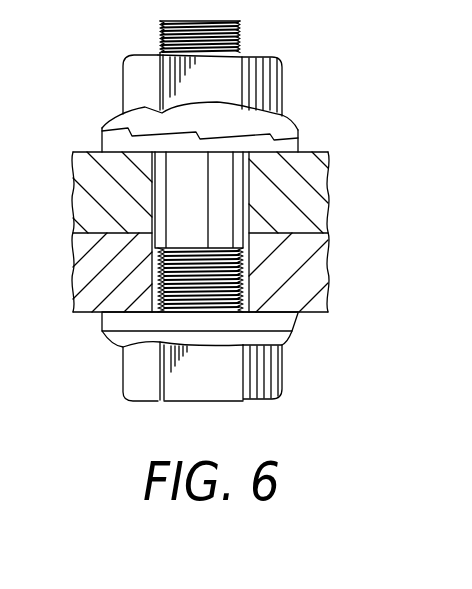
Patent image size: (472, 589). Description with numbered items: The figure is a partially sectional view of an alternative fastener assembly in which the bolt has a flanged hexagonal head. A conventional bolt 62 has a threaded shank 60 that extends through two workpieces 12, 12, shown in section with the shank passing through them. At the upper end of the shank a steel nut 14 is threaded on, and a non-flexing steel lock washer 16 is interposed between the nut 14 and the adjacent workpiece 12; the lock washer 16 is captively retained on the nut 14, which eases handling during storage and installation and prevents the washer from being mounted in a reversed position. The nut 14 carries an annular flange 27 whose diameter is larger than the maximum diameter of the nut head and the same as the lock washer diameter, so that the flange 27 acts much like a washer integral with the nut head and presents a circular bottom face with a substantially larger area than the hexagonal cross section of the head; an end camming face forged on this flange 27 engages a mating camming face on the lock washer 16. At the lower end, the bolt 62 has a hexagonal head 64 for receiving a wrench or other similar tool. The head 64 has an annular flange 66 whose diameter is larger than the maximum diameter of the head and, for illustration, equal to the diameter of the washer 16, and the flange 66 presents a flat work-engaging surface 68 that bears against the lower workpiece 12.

The threaded shank 60 is at (160, 28).
The nut 14 is at (280, 62).
The annular flange 27 is at (290, 120).
The lock washer 16 is at (300, 143).
The workpieces 12 is at (325, 193).
The flat work-engaging surface 68 is at (118, 313).
The annular flange 66 is at (288, 338).
The bolt 62 is at (123, 388).
The hexagonal head 64 is at (282, 377).